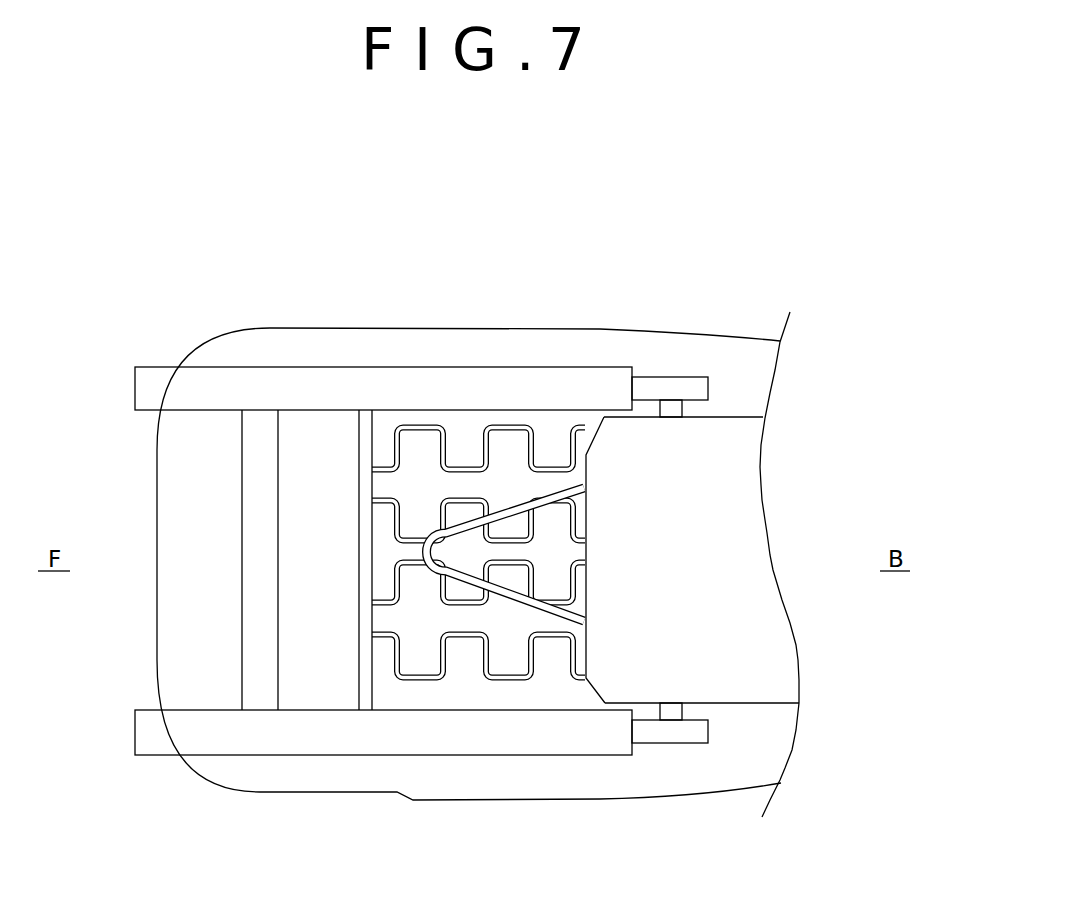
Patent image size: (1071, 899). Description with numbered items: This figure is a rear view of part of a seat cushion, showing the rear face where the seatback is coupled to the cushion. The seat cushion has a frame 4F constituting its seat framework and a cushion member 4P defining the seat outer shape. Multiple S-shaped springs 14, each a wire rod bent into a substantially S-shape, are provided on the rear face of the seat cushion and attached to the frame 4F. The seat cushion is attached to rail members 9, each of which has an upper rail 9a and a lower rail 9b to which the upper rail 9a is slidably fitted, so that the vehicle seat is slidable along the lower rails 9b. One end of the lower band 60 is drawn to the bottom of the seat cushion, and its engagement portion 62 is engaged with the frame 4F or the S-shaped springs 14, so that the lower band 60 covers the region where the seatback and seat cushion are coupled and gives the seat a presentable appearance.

The cushion member 4P is at (477, 327).
The frame 4F is at (342, 571).
The rail member 9 is at (453, 568).
The upper rail 9a is at (615, 383).
The lower rail 9b is at (645, 390).
The S-shaped spring 14 is at (588, 450).
The lower band 60 is at (630, 490).
The engagement portion 62 is at (583, 614).